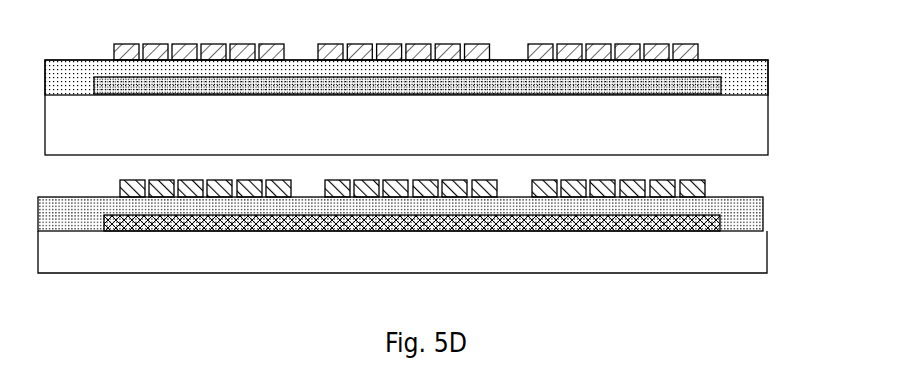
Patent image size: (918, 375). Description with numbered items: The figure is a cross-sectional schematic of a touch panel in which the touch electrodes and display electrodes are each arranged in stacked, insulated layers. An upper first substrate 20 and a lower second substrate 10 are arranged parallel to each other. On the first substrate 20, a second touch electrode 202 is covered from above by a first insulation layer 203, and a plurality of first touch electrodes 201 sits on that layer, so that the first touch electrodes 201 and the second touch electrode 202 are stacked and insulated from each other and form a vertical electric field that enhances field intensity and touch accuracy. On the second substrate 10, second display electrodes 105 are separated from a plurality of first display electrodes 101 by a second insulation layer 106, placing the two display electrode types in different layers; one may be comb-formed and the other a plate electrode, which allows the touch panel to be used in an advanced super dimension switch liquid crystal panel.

The second substrate 10 is at (752, 250).
The first display electrodes 101 is at (547, 192).
The second display electrodes 105 is at (413, 232).
The second insulation layer 106 is at (87, 217).
The first substrate 20 is at (750, 130).
The first touch electrodes 201 is at (271, 48).
The second touch electrode 202 is at (522, 87).
The first insulation layer 203 is at (101, 75).